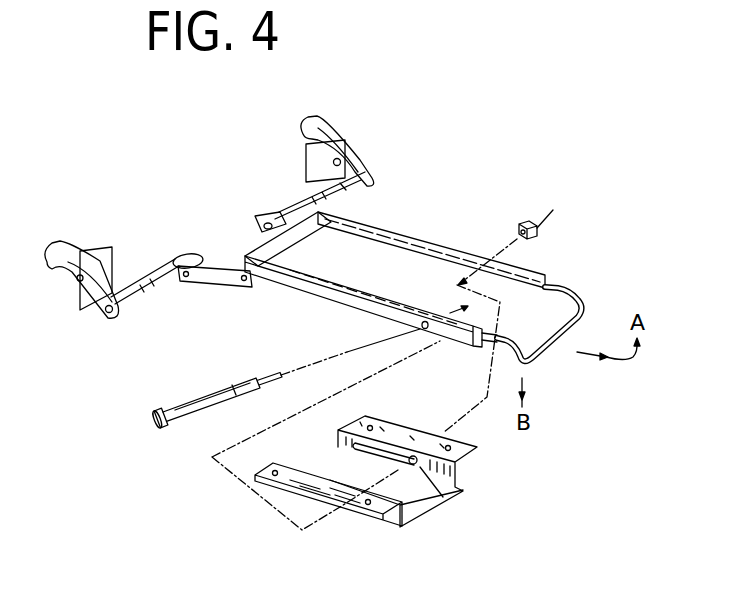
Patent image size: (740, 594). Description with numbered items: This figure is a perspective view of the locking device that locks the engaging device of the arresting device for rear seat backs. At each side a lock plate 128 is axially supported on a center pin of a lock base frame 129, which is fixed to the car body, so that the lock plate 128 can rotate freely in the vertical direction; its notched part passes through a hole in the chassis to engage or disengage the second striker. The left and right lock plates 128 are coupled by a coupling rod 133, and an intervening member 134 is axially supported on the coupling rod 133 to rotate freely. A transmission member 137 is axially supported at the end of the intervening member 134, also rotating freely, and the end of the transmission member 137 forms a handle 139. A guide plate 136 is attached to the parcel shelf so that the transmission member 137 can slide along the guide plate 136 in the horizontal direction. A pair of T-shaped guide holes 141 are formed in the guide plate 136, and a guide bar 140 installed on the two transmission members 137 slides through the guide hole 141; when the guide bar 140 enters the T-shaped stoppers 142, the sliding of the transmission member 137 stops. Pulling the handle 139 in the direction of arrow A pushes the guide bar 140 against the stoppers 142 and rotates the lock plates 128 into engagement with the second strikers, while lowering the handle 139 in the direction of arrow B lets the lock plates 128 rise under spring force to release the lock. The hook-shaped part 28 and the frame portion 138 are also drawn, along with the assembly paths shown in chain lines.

The hook 28 is at (328, 122).
The lock plate 128 is at (58, 244).
The lock base frame 129 is at (110, 243).
The coupling rod 133 is at (154, 268).
The intervening member 134 is at (280, 214).
The guide plate 136 is at (395, 521).
The transmission member 137 is at (424, 244).
The frame 138 is at (326, 223).
The handle 139 is at (536, 364).
The guide bar 140 is at (180, 420).
The guide hole 141 is at (350, 452).
The stopper 142 is at (406, 471).